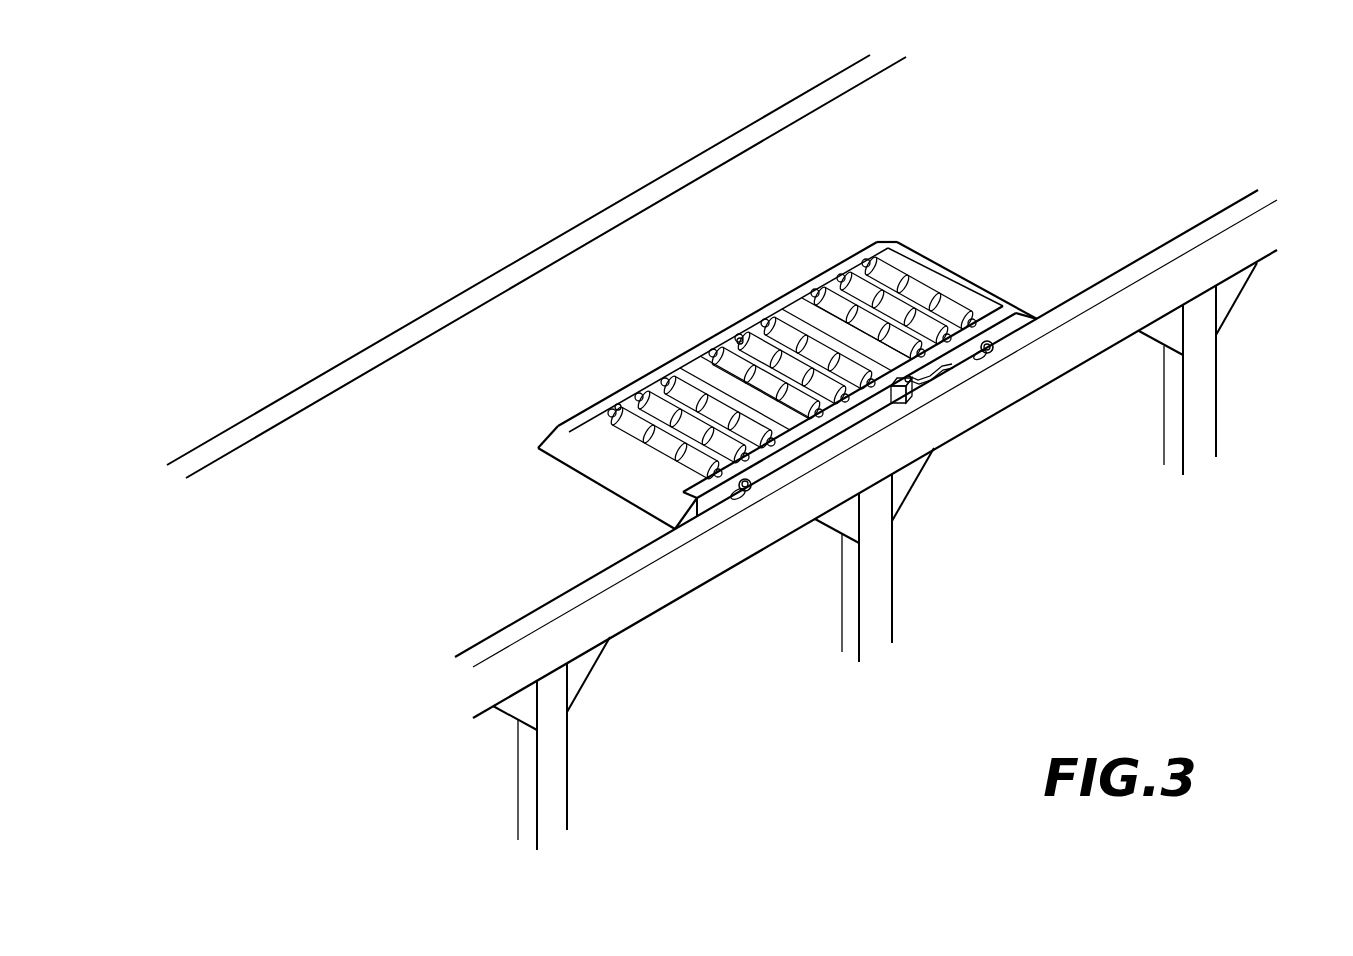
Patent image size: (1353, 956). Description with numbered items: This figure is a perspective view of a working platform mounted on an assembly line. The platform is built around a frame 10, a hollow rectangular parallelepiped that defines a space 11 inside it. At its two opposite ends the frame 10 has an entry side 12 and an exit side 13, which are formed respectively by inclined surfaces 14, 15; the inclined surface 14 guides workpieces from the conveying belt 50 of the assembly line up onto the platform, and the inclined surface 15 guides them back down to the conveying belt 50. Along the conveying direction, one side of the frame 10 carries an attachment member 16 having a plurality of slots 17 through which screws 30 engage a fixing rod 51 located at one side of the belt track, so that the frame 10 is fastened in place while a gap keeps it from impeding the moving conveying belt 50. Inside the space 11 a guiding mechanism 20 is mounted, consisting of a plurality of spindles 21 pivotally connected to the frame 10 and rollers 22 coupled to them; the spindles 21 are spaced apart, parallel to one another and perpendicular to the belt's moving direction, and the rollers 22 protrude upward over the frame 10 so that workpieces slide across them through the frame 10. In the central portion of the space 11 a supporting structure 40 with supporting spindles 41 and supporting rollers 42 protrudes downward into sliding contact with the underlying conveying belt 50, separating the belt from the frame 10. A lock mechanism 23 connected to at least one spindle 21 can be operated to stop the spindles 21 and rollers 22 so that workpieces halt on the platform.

The frame 10 is at (830, 269).
The space 11 is at (832, 327).
The entry side 12 is at (612, 498).
The exit side 13 is at (985, 282).
The inclined surface 14 is at (606, 474).
The inclined surface 15 is at (957, 287).
The attachment member 16 is at (876, 431).
The slot 17 is at (756, 479).
The guiding mechanism 20 is at (645, 408).
The spindle 21 is at (611, 408).
The roller 22 is at (618, 404).
The lock mechanism 23 is at (946, 377).
The screw 30 is at (742, 478).
The supporting structure 40 is at (771, 347).
The supporting spindle 41 is at (740, 345).
The supporting roller 42 is at (753, 345).
The conveying belt 50 is at (493, 245).
The fixing rod 51 is at (692, 574).